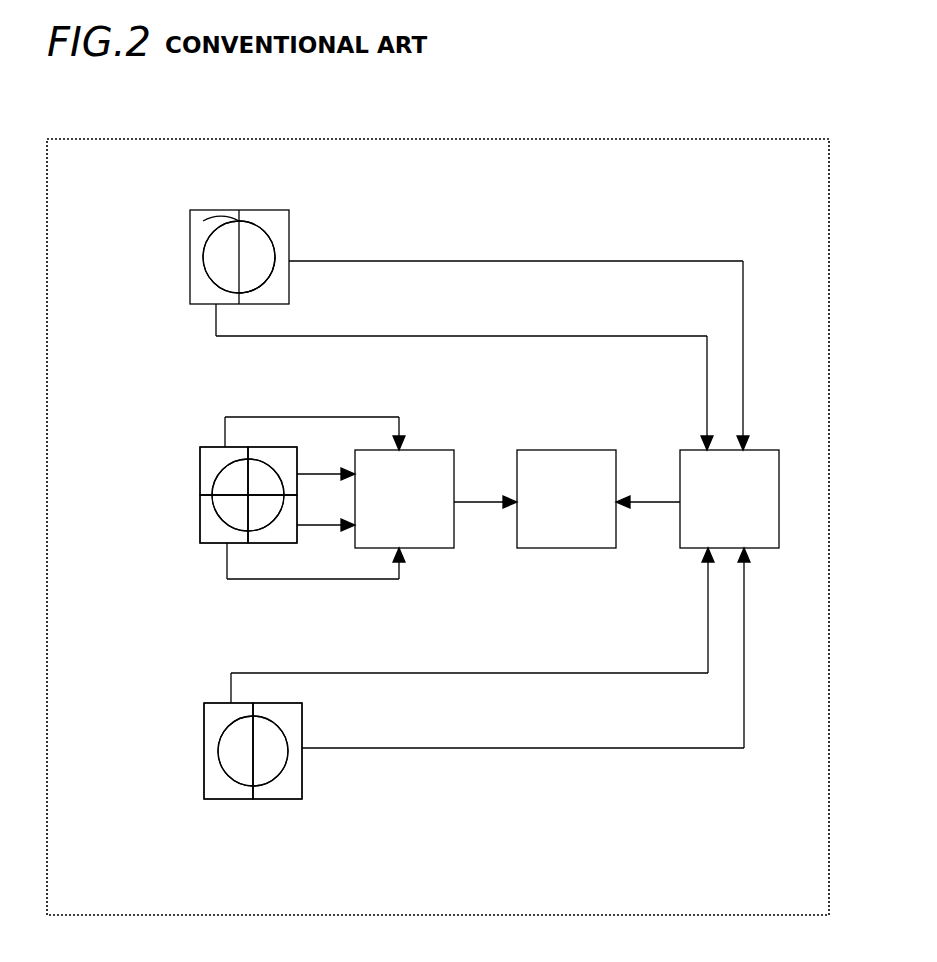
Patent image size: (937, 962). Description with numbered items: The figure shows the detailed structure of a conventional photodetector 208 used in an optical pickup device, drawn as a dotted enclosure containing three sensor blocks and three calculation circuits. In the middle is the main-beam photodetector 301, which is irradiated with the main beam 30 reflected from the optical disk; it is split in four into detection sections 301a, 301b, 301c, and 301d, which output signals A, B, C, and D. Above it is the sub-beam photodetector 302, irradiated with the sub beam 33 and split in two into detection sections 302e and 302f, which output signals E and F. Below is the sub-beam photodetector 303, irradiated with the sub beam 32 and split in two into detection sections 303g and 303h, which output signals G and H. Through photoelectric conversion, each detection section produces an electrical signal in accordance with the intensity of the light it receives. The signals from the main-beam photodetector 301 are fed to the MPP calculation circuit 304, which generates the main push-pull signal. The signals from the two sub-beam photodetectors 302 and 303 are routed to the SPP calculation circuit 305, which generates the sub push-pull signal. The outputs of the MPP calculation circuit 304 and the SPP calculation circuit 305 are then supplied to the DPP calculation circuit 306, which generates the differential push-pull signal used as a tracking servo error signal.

The photodetector 208 is at (533, 130).
The sub-beam photodetector 302 is at (265, 194).
The detection section 302f is at (215, 222).
The sub beam 33 is at (216, 260).
The detection section 302e is at (282, 289).
The main-beam photodetector 301 is at (195, 440).
The detection section 301a is at (212, 465).
The detection section 301b is at (272, 456).
The detection section 301c is at (282, 533).
The detection section 301d is at (208, 533).
The main beam 30 is at (220, 503).
The MPP calculation circuit 304 is at (437, 456).
The DPP calculation circuit 306 is at (576, 456).
The SPP calculation circuit 305 is at (686, 545).
The sub-beam photodetector 303 is at (285, 810).
The detection section 303g is at (298, 722).
The detection section 303h is at (225, 783).
The sub beam 32 is at (228, 748).